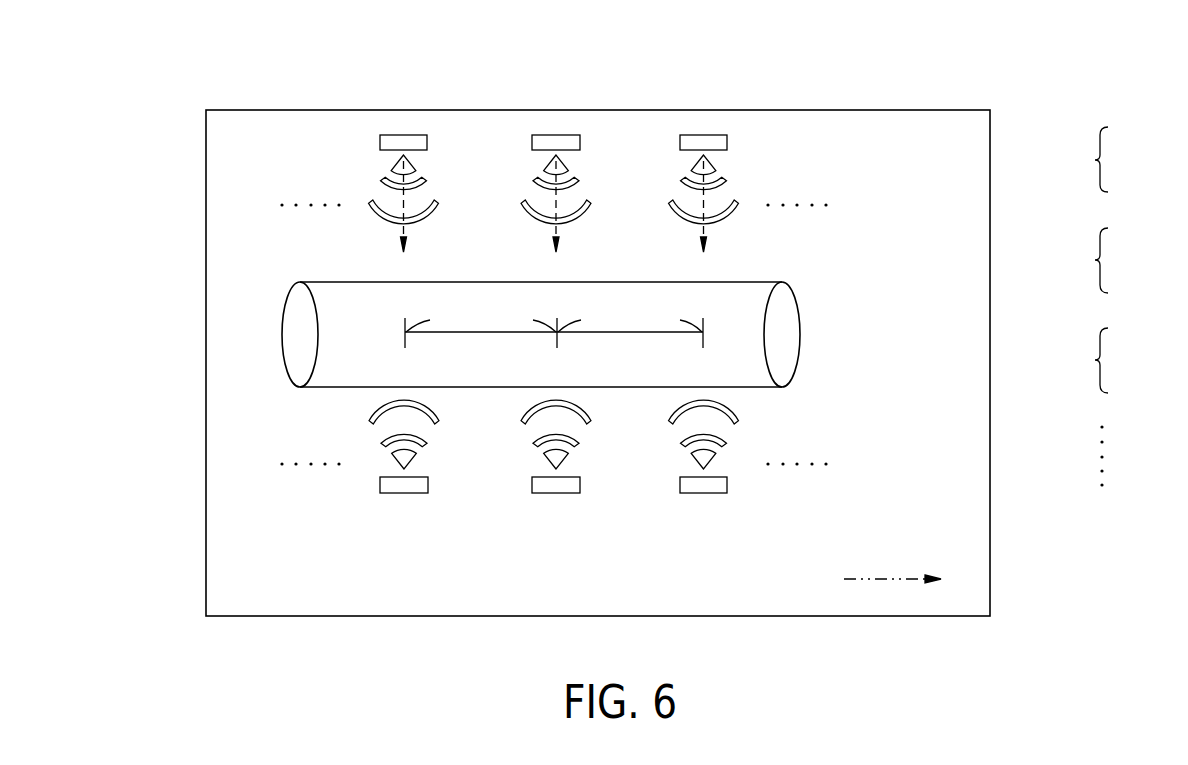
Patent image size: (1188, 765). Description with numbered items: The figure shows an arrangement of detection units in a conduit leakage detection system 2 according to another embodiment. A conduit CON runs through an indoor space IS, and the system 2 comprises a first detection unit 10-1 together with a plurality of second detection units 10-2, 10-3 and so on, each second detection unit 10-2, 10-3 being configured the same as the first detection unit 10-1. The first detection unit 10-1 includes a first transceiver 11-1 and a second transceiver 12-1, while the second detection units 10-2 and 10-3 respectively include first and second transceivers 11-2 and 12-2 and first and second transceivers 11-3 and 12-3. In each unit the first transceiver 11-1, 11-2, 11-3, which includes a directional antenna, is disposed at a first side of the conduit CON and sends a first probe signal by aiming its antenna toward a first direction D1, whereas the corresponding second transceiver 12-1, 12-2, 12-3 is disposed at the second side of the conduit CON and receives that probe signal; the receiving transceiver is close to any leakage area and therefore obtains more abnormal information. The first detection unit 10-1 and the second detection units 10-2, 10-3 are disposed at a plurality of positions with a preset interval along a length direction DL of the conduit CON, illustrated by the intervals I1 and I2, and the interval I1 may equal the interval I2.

The conduit leakage detection system 2 is at (87, 48).
The indoor space IS is at (505, 110).
The conduit CON is at (801, 332).
The first transceiver 11-1 is at (727, 141).
The first transceiver 11-2 is at (580, 141).
The first transceiver 11-3 is at (427, 141).
The second transceiver 12-1 is at (704, 493).
The second transceiver 12-2 is at (556, 493).
The second transceiver 12-3 is at (404, 493).
The first detection unit 10-1 is at (1101, 160).
The second detection unit 10-2 is at (1101, 261).
The second detection unit 10-3 is at (1101, 361).
The first direction D1 is at (579, 250).
The interval I1 is at (481, 324).
The interval I2 is at (630, 324).
The length direction DL is at (895, 557).